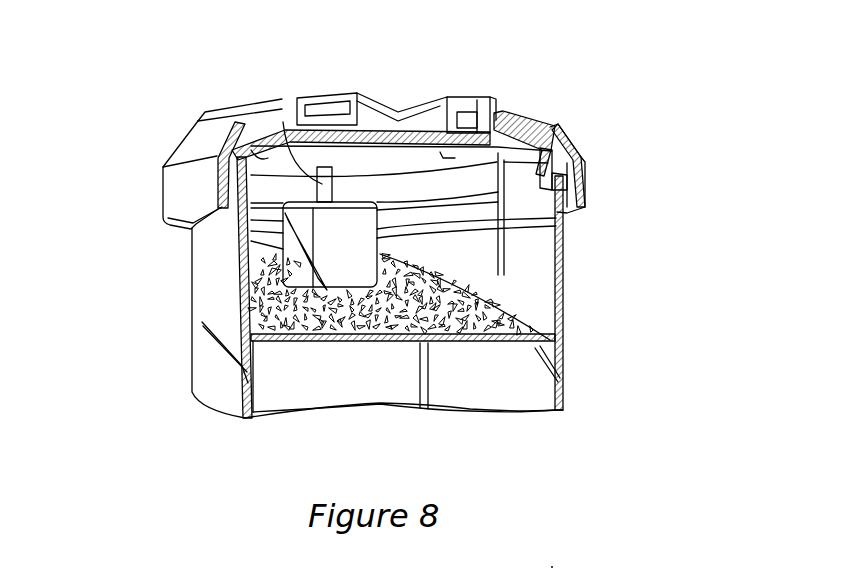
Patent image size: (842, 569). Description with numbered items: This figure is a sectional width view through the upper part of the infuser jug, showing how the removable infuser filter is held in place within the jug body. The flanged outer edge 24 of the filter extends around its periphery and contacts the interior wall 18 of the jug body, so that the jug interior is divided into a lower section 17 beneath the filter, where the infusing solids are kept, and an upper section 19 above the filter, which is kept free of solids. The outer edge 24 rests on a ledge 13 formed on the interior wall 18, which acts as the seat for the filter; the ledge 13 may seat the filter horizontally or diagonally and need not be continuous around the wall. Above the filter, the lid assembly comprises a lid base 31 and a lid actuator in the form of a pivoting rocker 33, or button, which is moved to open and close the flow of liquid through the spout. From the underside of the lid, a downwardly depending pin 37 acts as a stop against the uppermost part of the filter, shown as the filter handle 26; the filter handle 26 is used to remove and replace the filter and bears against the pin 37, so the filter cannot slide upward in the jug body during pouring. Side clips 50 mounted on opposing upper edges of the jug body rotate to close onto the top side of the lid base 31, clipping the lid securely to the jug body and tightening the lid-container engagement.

The ledge 13 is at (245, 373).
The lower section 17 is at (291, 390).
The interior wall 18 is at (550, 393).
The upper section 19 is at (533, 272).
The flanged outer edge 24 is at (550, 347).
The filter handle 26 is at (345, 225).
The lid base 31 is at (520, 128).
The pivoting rocker 33 is at (480, 93).
The pin 37 is at (272, 140).
The side clips 50 is at (197, 183).